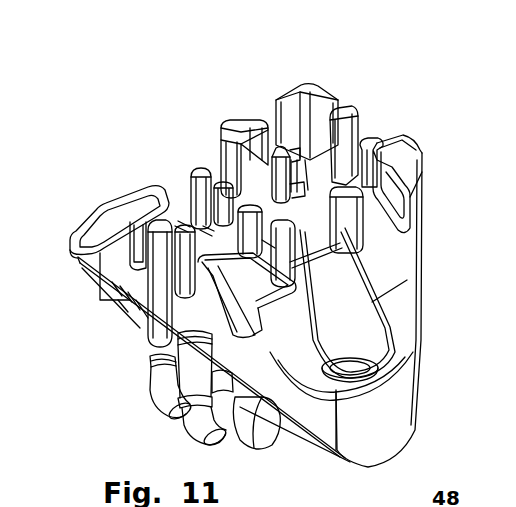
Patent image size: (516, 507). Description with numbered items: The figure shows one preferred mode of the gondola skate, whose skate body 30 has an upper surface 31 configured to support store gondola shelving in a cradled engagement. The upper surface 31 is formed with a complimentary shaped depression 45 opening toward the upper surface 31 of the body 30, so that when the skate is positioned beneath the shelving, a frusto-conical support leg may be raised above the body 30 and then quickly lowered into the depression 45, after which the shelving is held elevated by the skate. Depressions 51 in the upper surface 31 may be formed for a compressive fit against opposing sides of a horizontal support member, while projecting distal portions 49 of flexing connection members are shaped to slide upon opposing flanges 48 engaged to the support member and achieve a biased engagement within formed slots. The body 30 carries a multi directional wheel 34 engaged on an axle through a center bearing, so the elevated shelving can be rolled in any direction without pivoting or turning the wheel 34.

The gondola skate body 30 is at (108, 224).
The upper surface 31 is at (295, 190).
The multi directional wheel 34 is at (157, 362).
The complimentary shaped depression 45 is at (363, 365).
The opposing flanges 48 is at (246, 310).
The projecting distal portions 49 is at (153, 235).
The depressions 51 is at (272, 195).